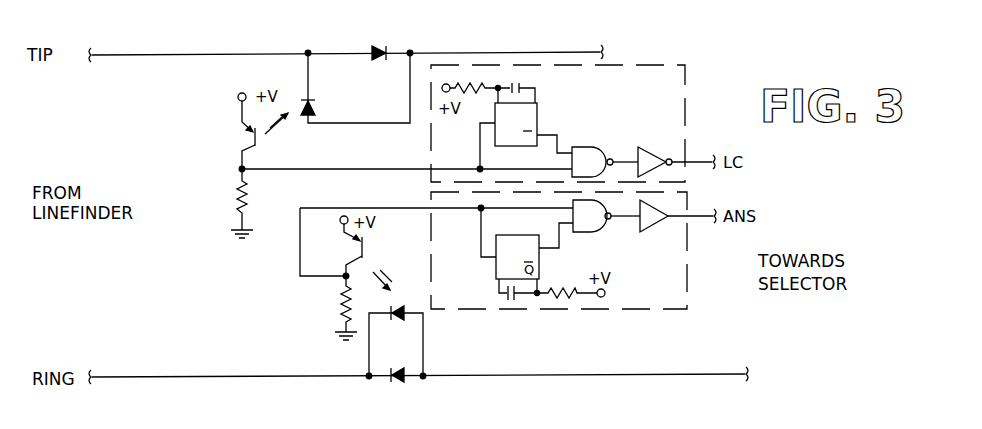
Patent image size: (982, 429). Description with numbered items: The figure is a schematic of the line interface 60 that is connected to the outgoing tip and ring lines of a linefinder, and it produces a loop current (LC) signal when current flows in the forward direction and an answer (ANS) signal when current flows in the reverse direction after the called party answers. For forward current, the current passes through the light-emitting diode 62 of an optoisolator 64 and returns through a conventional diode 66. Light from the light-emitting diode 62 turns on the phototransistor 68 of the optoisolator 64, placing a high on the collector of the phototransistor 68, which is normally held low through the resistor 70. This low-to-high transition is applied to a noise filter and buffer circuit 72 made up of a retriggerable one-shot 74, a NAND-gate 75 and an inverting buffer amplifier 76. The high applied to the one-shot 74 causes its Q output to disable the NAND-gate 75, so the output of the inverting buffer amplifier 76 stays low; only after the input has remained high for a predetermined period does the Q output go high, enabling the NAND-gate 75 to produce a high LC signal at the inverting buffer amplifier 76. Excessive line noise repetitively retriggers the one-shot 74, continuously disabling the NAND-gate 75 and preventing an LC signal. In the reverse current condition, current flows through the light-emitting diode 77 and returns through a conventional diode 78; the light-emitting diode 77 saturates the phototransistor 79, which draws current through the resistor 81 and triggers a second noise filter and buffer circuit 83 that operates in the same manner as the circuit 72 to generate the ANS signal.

The line interface 60 is at (353, 31).
The light-emitting diode 62 is at (313, 93).
The optoisolator 64 is at (222, 111).
The conventional diode 66 is at (400, 379).
The phototransistor 68 is at (253, 137).
The resistor 70 is at (238, 186).
The noise filter and buffer circuit 72 is at (650, 64).
The retriggerable one-shot 74 is at (540, 112).
The NAND-gate 75 is at (591, 146).
The inverting buffer amplifier 76 is at (655, 146).
The light-emitting diode 77 is at (397, 322).
The conventional diode 78 is at (386, 47).
The phototransistor 79 is at (368, 248).
The resistor 81 is at (341, 307).
The noise filter and buffer circuit 83 is at (650, 310).